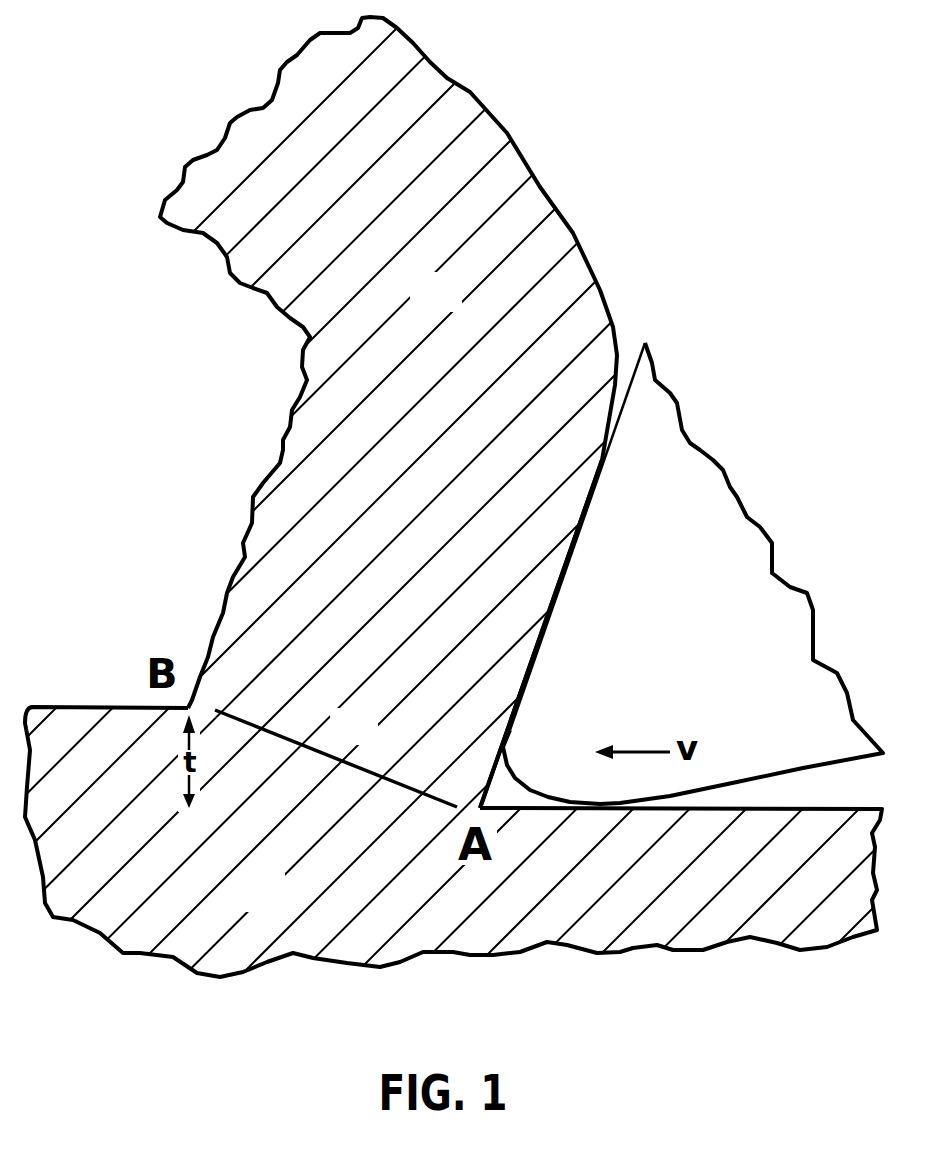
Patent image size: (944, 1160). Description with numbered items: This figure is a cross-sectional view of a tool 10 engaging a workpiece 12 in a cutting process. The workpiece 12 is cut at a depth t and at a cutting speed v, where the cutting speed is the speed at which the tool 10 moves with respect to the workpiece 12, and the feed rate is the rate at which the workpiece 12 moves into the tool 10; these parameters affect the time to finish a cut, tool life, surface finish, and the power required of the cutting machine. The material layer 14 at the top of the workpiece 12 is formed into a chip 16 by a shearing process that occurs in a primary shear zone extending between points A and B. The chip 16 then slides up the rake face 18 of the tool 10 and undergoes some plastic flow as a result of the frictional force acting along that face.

The tool 10 is at (663, 608).
The workpiece 12 is at (244, 908).
The material layer 14 is at (370, 742).
The chip 16 is at (419, 306).
The rake face 18 is at (560, 600).